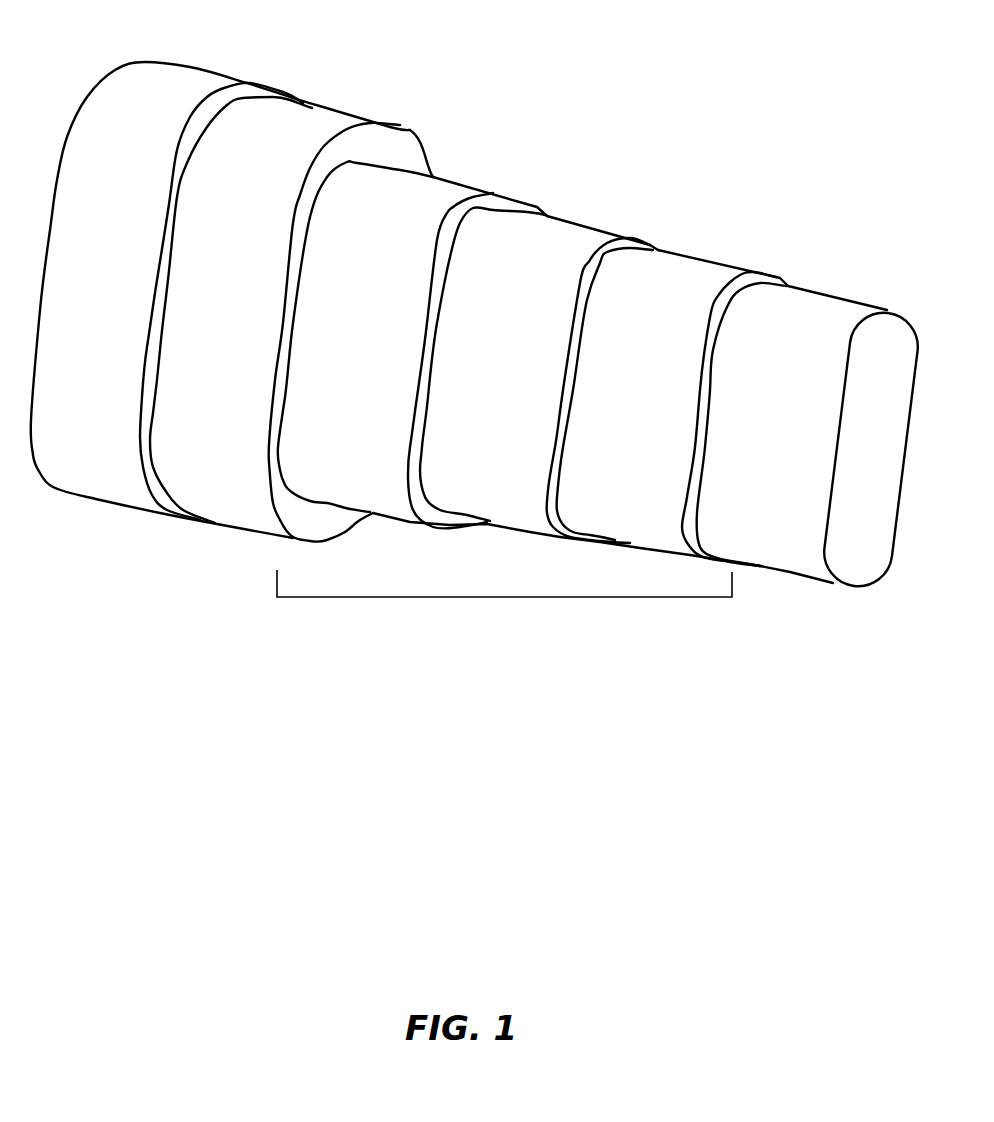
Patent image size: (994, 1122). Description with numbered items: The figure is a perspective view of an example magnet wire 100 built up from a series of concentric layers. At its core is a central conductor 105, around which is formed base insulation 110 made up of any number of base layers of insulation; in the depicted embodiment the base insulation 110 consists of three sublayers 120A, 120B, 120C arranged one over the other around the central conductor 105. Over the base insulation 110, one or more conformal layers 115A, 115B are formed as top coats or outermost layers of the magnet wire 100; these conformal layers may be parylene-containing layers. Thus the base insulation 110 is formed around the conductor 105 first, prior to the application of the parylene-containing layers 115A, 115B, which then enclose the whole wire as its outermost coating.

The magnet wire 100 is at (88, 683).
The central conductor 105 is at (825, 322).
The base insulation 110 is at (504, 610).
The conformal layer 115A is at (308, 144).
The conformal layer 115B is at (199, 114).
The sublayer 120A is at (691, 286).
The sublayer 120B is at (572, 256).
The sublayer 120C is at (433, 207).